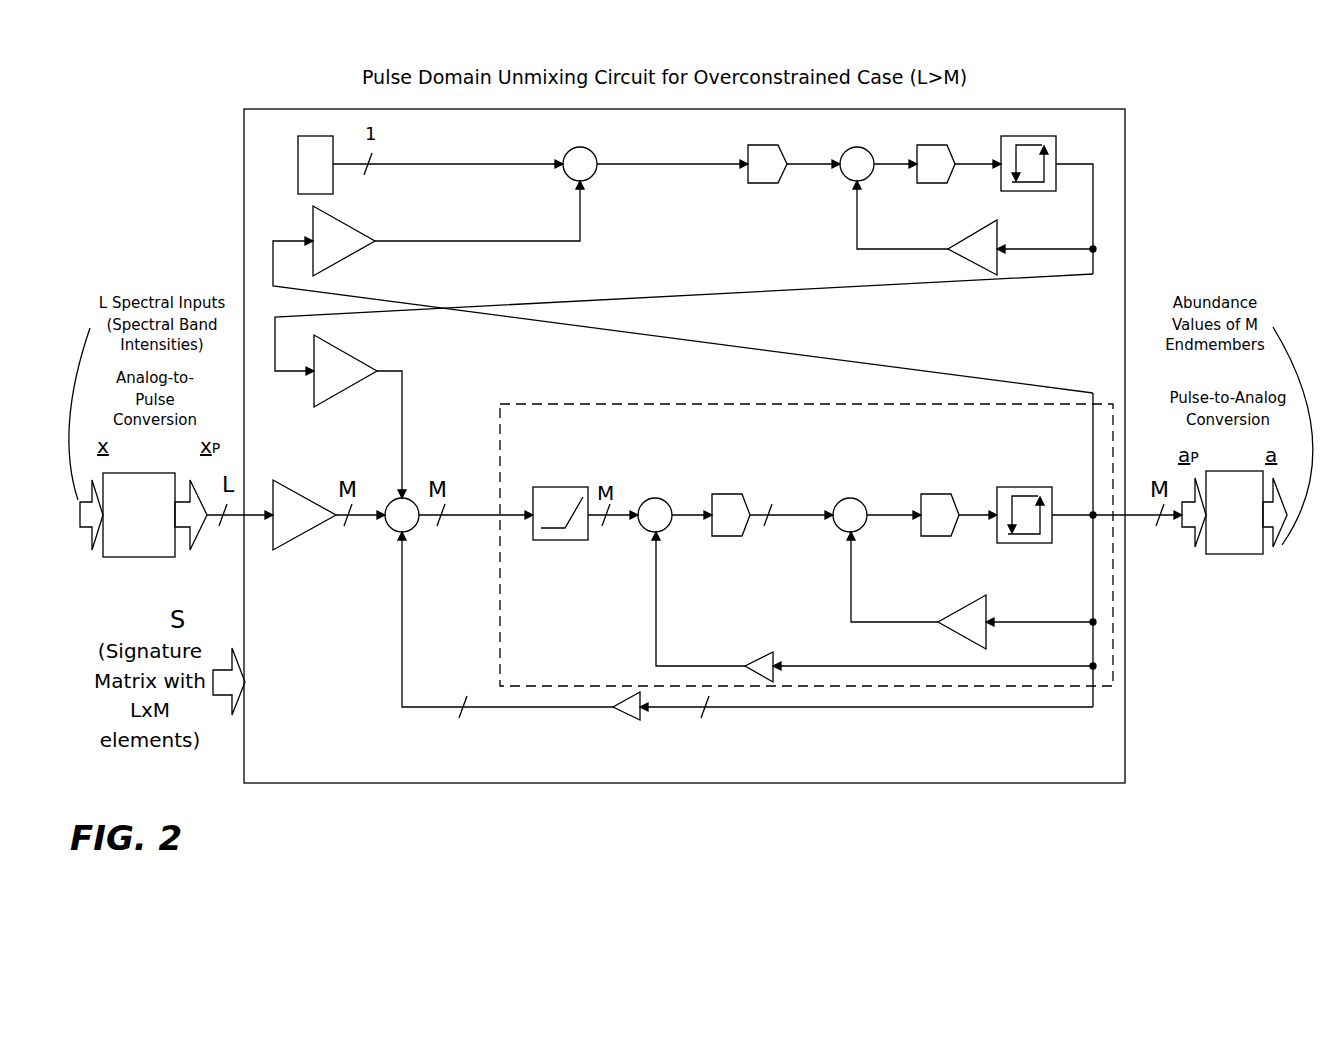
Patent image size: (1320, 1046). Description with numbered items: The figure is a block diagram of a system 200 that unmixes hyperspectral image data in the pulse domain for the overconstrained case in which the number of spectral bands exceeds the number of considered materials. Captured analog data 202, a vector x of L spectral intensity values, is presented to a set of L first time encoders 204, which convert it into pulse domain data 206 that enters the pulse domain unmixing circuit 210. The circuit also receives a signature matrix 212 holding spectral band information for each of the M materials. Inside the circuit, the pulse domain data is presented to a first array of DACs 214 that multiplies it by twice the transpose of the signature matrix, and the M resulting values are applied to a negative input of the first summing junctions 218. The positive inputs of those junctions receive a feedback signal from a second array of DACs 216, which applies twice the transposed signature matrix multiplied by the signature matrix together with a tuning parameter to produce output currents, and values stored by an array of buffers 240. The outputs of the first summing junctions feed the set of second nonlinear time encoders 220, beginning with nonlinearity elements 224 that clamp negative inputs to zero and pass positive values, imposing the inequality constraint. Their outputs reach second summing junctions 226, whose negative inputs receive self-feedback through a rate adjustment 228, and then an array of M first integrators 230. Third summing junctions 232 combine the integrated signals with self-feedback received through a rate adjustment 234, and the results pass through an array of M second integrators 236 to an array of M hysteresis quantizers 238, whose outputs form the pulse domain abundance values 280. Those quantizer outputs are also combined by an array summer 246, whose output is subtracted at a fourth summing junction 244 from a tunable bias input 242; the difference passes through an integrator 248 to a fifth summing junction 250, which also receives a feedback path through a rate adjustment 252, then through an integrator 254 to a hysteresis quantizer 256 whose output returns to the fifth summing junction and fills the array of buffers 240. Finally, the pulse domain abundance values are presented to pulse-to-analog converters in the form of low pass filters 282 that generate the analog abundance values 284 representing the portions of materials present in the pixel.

The system 200 is at (112, 112).
The captured analog data 202 is at (92, 437).
The first time encoders 204 is at (130, 471).
The pulse domain data 206 is at (217, 437).
The pulse domain unmixing circuit 210 is at (1127, 152).
The signature matrix 212 is at (160, 620).
The first array of DACs 214 is at (286, 486).
The second array of DACs 216 is at (630, 706).
The first summing junctions 218 is at (409, 497).
The second nonlinear time encoders 220 is at (543, 403).
The nonlinearity elements 224 is at (570, 542).
The second summing junctions 226 is at (642, 500).
The rate adjustment 228 is at (752, 660).
The first integrators 230 is at (730, 532).
The third summing junctions 232 is at (836, 497).
The rate adjustment 234 is at (953, 612).
The second integrators 236 is at (928, 535).
The hysteresis quantizers 238 is at (1033, 543).
The array of buffers 240 is at (332, 395).
The tunable bias input 242 is at (306, 134).
The fourth summing junction 244 is at (580, 147).
The array summer 246 is at (350, 255).
The integrator 248 is at (757, 183).
The fifth summing junction 250 is at (867, 147).
The rate adjustment 252 is at (968, 232).
The integrator 254 is at (925, 183).
The hysteresis quantizer 256 is at (1013, 191).
The pulse domain abundance values 280 is at (1172, 453).
The low pass filters 282 is at (1213, 470).
The abundance values 284 is at (1280, 453).